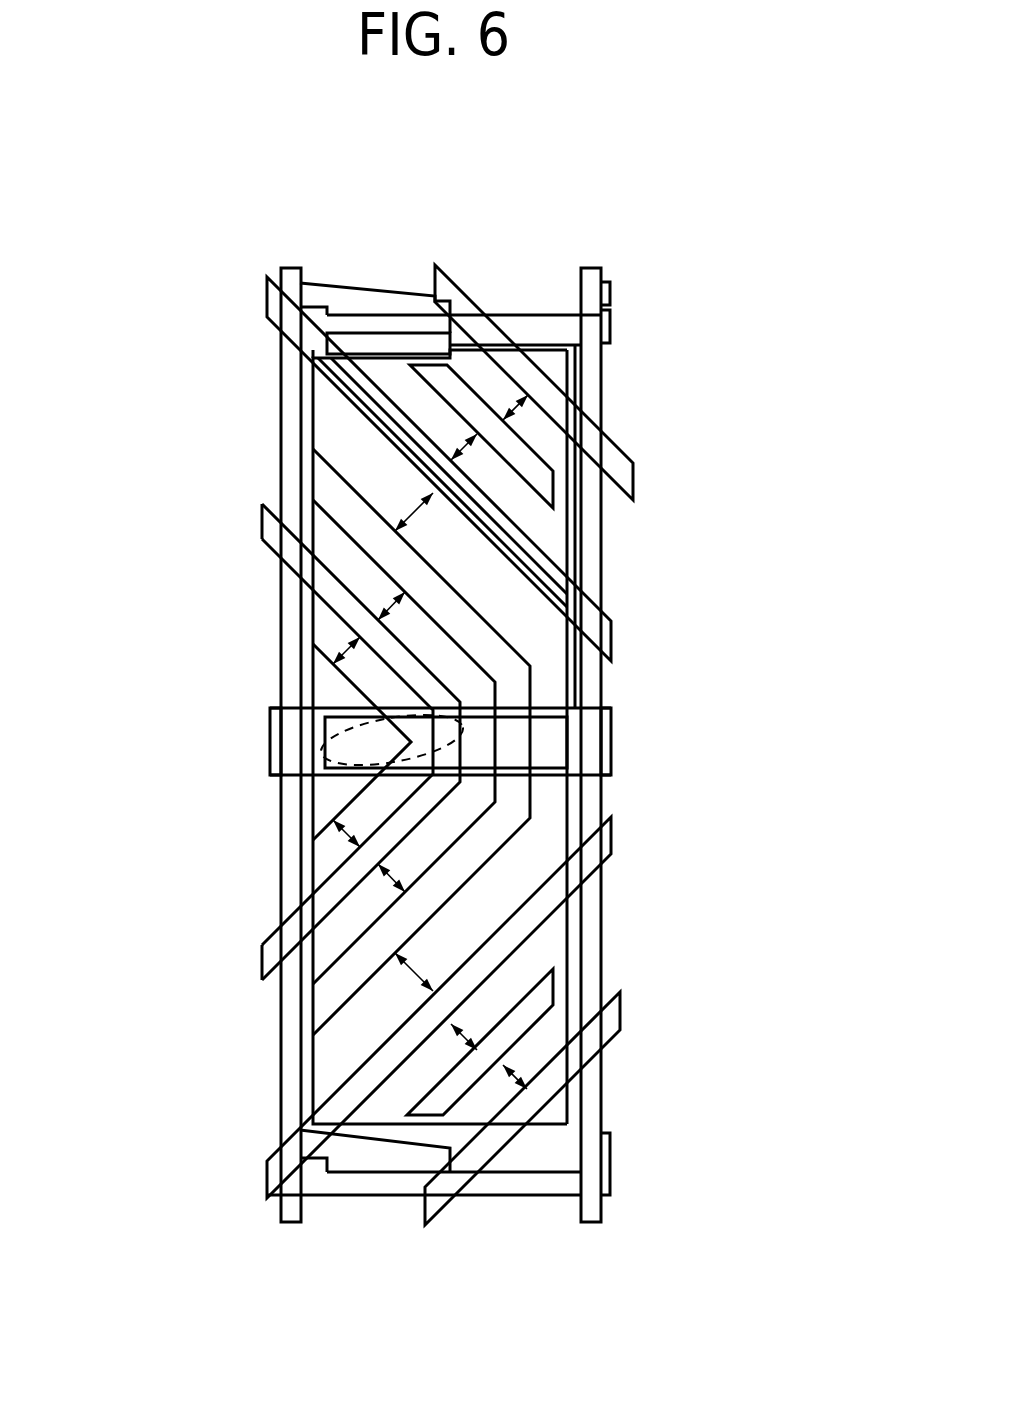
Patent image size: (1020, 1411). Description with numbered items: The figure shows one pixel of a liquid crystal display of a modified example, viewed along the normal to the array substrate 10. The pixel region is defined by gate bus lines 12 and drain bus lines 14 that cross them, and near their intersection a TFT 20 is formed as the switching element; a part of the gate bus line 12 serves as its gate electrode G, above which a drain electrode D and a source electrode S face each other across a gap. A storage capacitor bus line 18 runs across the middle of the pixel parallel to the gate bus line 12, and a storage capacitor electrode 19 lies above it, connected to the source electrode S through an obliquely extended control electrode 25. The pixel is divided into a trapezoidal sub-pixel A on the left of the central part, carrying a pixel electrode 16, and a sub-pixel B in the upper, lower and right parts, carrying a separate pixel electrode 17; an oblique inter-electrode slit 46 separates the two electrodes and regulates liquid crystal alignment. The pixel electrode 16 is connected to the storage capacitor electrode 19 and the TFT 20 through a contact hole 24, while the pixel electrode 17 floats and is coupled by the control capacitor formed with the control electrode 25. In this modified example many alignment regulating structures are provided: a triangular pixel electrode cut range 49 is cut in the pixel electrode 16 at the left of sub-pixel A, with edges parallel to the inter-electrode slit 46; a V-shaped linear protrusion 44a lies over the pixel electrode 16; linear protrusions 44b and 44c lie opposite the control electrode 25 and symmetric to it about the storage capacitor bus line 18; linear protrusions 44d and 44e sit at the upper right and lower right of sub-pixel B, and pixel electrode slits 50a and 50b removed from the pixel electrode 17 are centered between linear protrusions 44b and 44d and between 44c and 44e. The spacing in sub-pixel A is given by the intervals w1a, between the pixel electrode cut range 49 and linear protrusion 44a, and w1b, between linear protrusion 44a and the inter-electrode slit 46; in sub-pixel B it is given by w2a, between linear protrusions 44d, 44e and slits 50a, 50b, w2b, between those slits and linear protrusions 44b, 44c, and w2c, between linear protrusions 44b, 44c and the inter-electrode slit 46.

The array substrate 10 is at (216, 231).
The gate bus line 12 is at (541, 313).
The drain bus line 14 is at (290, 1224).
The pixel electrode 16 is at (336, 505).
The pixel electrode 17 is at (562, 493).
The storage capacitor bus line 18 is at (612, 742).
The storage capacitor electrode 19 is at (549, 708).
The TFT 20 is at (375, 678).
The contact hole 24 is at (325, 755).
The control electrode 25 is at (549, 574).
The linear protrusion 44a is at (262, 520).
The linear protrusion 44b is at (613, 637).
The linear protrusion 44c is at (613, 832).
The linear protrusion 44d is at (605, 448).
The linear protrusion 44e is at (622, 1010).
The inter-electrode slit 46 is at (412, 945).
The pixel electrode cut range 49 is at (326, 690).
The pixel electrode slit 50a is at (568, 487).
The pixel electrode slit 50b is at (555, 990).
The sub-pixel A is at (300, 871).
The sub-pixel B is at (578, 372).
The drain electrode D is at (351, 287).
The gate electrode G is at (337, 328).
The source electrode S is at (416, 334).
The structure interval w1a is at (346, 651).
The structure interval w1b is at (391, 606).
The structure interval w2a is at (515, 405).
The structure interval w2b is at (470, 447).
The structure interval w2c is at (412, 512).